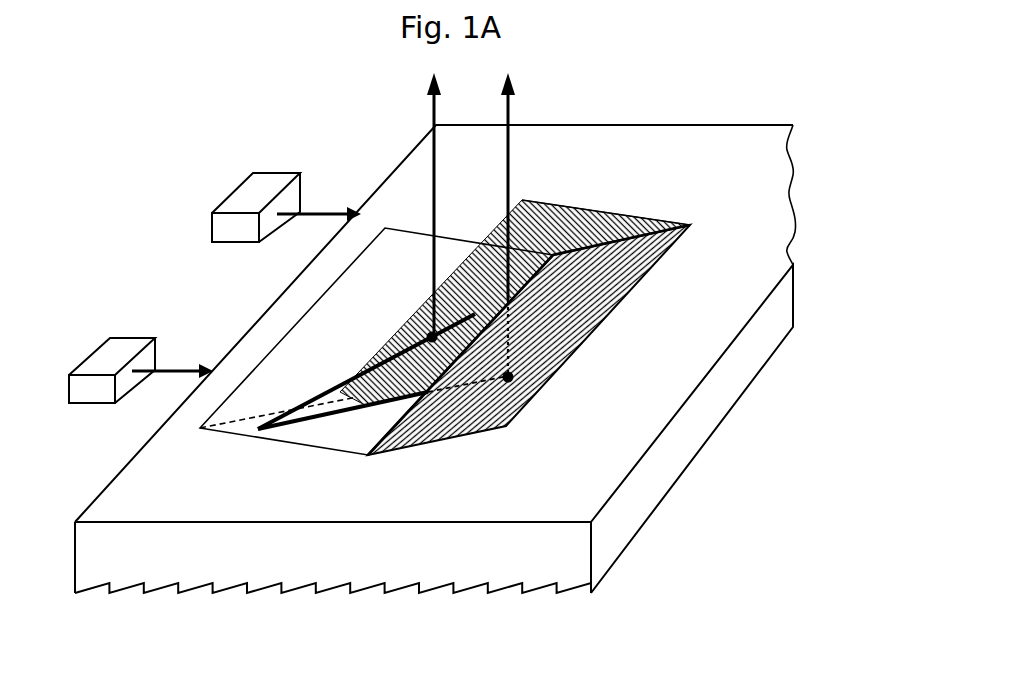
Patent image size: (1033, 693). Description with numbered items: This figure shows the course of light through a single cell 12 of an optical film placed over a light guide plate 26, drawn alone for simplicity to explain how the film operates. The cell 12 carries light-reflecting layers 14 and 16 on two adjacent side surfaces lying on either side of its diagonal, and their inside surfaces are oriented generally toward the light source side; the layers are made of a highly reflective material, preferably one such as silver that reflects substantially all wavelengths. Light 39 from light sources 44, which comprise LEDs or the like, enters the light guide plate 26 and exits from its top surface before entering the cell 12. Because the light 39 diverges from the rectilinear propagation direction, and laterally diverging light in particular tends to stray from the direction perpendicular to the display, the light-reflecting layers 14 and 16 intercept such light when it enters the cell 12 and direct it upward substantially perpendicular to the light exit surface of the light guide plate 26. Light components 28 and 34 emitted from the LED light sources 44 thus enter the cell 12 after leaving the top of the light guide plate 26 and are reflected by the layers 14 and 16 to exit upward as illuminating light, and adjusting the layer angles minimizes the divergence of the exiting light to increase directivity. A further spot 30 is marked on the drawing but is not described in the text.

The cell 12 is at (610, 185).
The light-reflecting layer 14 is at (588, 298).
The light-reflecting layer 16 is at (547, 222).
The light guide plate 26 is at (665, 458).
The light component 28 is at (335, 412).
The beam irradiation spot 30 is at (425, 335).
The light component 34 is at (337, 415).
The light 39 is at (300, 213).
The light source 44 is at (228, 228).